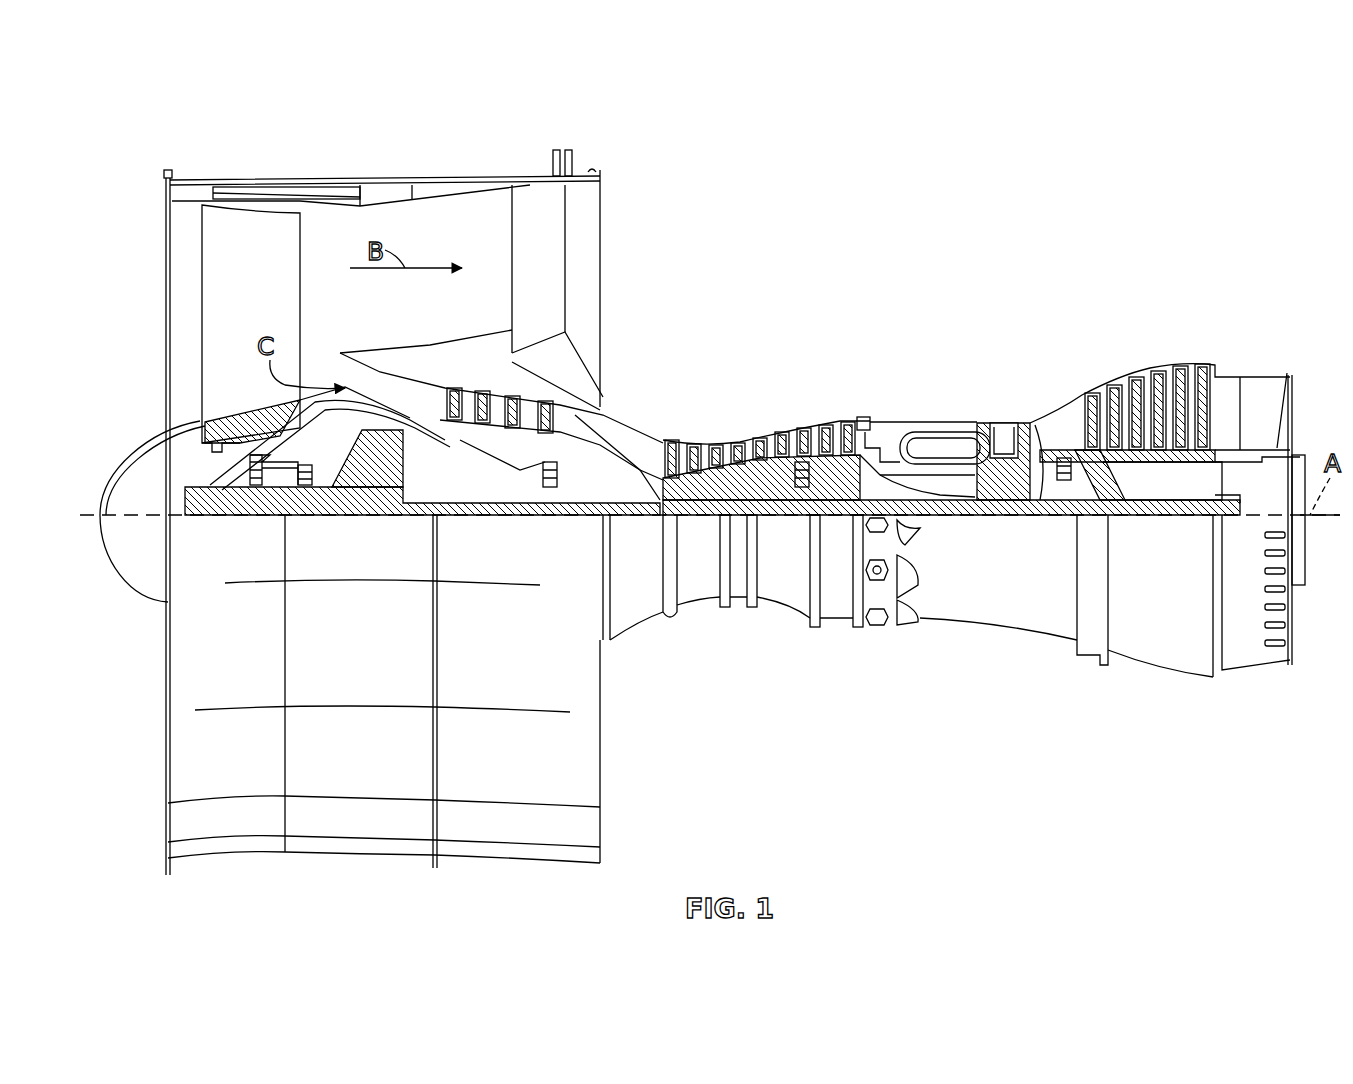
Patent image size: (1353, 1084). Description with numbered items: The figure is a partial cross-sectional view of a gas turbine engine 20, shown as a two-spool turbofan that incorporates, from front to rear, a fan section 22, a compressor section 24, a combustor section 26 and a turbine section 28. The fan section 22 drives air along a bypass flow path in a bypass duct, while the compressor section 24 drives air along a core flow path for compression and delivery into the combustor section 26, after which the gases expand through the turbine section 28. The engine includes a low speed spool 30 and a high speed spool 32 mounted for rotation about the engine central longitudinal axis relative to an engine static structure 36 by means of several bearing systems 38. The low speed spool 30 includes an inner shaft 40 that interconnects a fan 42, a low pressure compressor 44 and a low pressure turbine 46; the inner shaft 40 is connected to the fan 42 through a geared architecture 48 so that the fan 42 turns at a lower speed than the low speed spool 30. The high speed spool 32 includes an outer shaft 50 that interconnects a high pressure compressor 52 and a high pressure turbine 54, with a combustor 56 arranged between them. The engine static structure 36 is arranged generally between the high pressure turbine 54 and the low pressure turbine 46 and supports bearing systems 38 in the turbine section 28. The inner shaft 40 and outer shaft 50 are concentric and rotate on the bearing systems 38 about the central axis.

The gas turbine engine 20 is at (1125, 210).
The fan section 22 is at (265, 172).
The compressor section 24 is at (773, 385).
The combustor section 26 is at (925, 385).
The turbine section 28 is at (1060, 368).
The low speed spool 30 is at (805, 518).
The high speed spool 32 is at (848, 462).
The engine static structure 36 is at (845, 625).
The bearing systems 38 is at (258, 485).
The inner shaft 40 is at (612, 518).
The fan 42 is at (276, 297).
The low pressure compressor 44 is at (525, 405).
The low pressure turbine 46 is at (1157, 385).
The geared architecture 48 is at (382, 490).
The outer shaft 50 is at (932, 497).
The high pressure compressor 52 is at (765, 475).
The high pressure turbine 54 is at (1005, 418).
The combustor 56 is at (938, 436).